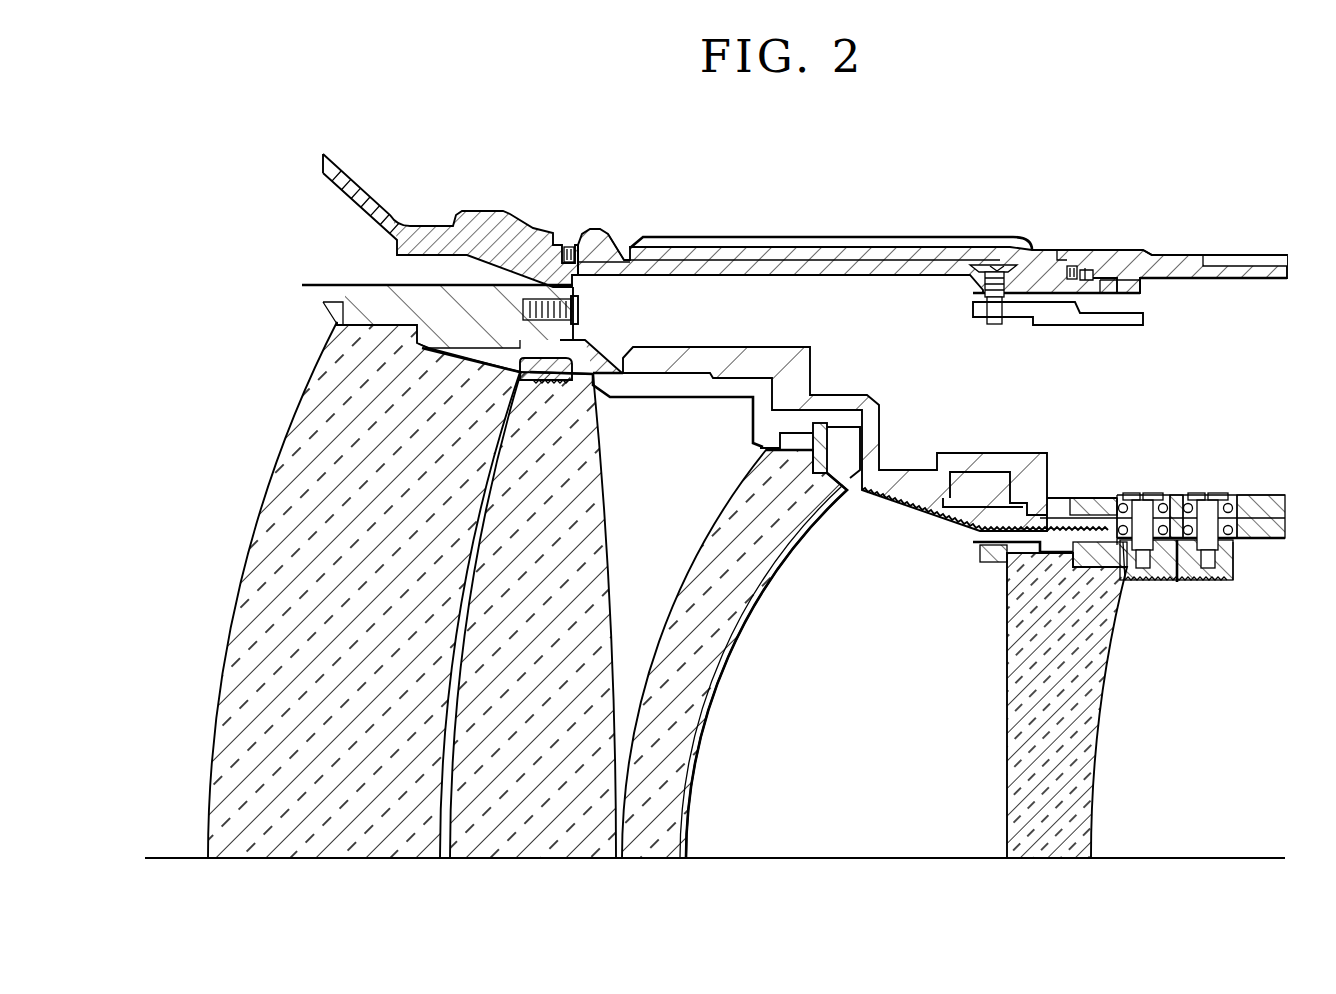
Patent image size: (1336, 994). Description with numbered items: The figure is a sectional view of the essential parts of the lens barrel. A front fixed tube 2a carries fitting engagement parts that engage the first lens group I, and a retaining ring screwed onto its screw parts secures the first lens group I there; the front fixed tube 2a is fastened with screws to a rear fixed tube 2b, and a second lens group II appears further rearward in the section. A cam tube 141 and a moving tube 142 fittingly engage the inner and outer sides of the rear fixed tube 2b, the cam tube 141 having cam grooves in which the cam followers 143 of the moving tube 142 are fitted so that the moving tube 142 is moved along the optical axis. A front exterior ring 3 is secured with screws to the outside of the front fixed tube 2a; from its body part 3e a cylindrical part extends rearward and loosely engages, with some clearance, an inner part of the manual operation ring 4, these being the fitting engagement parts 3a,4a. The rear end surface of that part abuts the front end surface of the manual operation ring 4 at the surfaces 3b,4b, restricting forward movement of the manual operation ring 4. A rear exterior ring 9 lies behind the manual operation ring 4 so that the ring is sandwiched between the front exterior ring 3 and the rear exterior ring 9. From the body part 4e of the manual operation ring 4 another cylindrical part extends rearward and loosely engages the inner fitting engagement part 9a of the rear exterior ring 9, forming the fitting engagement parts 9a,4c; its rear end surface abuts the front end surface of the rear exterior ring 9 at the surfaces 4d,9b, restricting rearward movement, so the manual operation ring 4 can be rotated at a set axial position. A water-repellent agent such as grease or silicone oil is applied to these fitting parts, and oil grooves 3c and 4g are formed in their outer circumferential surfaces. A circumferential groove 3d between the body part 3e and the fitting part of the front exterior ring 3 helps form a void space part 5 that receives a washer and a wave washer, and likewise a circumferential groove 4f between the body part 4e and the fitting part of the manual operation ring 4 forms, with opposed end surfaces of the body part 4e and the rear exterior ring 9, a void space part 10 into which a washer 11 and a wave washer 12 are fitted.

The front exterior ring 3 is at (450, 190).
The body part 3e is at (427, 182).
The front fixed tube 2a is at (462, 256).
The void space part 5 is at (567, 198).
The manual operation ring 4 is at (932, 231).
The fitting engagement part and inner fitting engagement part 3a,4a is at (649, 215).
The rear end surface and front end surface 3b,4b is at (658, 290).
The oil groove 3c is at (613, 301).
The circumferential groove 3d is at (571, 308).
The body part 4e is at (826, 219).
The rear fixed tube 2b is at (823, 444).
The void space part 10 is at (1062, 222).
The washer 11 is at (1096, 229).
The rear exterior ring 9 is at (1190, 232).
The inner fitting engagement part 9a is at (1233, 220).
The rear end surface and front end surface 4d,9b is at (1178, 307).
The oil groove 4g is at (1145, 322).
The inner fitting engagement part and fitting engagement part 9a,4c is at (1130, 333).
The circumferential groove 4f is at (1058, 327).
The wave washer 12 is at (1014, 317).
The cam followers 143 is at (1177, 497).
The cam tube 141 is at (1167, 551).
The moving tube 142 is at (1176, 600).
The first lens group I is at (364, 580).
The second lens group II is at (1038, 705).